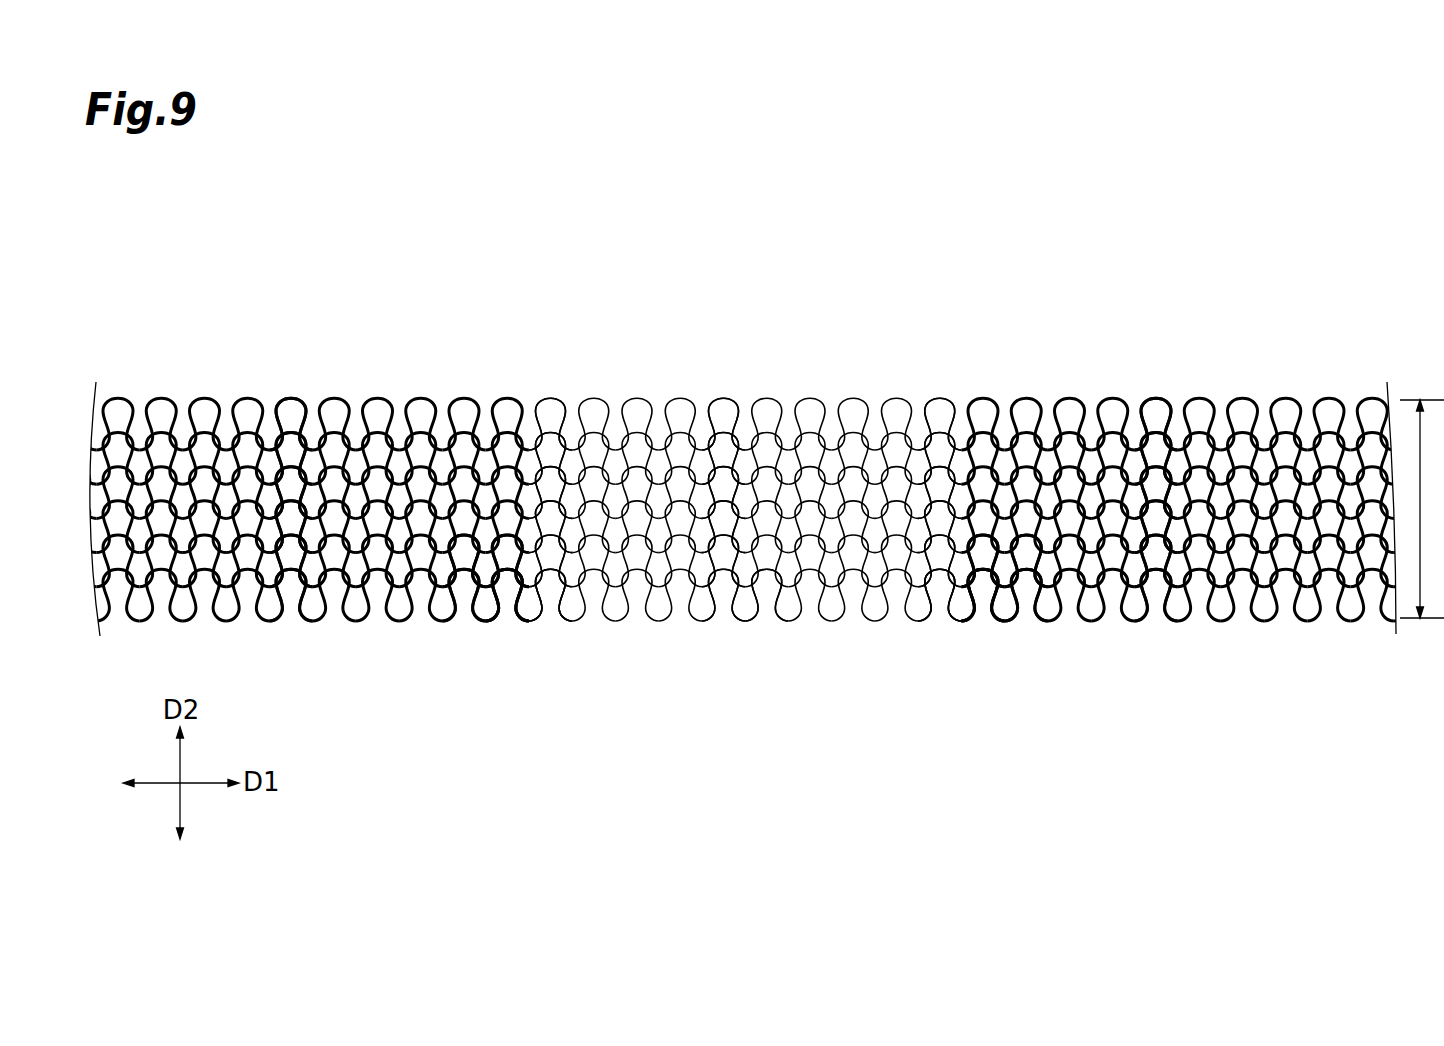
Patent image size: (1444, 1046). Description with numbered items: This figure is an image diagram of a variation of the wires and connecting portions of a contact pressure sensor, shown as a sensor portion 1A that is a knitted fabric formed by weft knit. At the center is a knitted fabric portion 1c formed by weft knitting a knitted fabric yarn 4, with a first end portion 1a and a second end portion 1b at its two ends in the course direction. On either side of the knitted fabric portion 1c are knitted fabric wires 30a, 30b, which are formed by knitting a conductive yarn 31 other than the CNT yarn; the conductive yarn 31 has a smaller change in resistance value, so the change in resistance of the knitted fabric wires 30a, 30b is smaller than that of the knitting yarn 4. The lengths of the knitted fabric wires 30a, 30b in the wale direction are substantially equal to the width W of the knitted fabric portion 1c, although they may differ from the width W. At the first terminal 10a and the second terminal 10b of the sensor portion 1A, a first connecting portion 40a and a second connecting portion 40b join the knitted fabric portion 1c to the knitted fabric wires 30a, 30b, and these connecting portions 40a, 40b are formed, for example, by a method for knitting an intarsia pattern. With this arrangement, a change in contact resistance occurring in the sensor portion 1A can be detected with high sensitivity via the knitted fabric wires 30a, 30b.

The sensor portion 1A is at (745, 511).
The first end portion 1a is at (551, 393).
The second end portion 1b is at (935, 393).
The knitted fabric portion 1c is at (757, 389).
The knitted fabric yarn 4 is at (723, 396).
The conductive yarn 31 is at (291, 396).
The first terminal 10a is at (527, 622).
The second terminal 10b is at (960, 622).
The first connecting portion 40a is at (497, 637).
The second connecting portion 40b is at (985, 637).
The knitted fabric wire 30a is at (311, 651).
The knitted fabric wire 30b is at (1177, 651).
The width of the knitted fabric portion W is at (1422, 509).